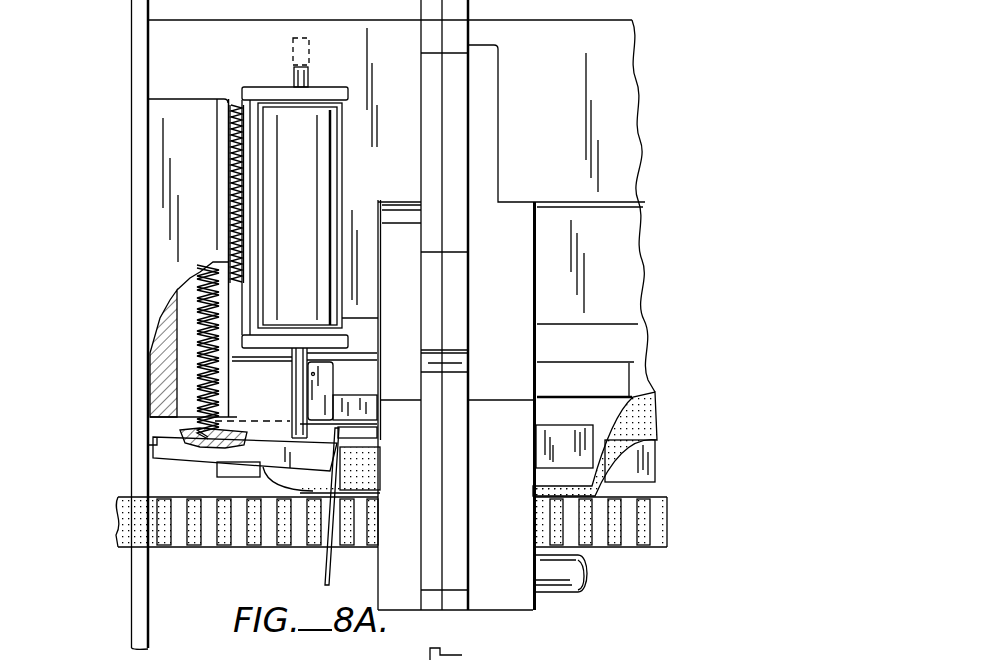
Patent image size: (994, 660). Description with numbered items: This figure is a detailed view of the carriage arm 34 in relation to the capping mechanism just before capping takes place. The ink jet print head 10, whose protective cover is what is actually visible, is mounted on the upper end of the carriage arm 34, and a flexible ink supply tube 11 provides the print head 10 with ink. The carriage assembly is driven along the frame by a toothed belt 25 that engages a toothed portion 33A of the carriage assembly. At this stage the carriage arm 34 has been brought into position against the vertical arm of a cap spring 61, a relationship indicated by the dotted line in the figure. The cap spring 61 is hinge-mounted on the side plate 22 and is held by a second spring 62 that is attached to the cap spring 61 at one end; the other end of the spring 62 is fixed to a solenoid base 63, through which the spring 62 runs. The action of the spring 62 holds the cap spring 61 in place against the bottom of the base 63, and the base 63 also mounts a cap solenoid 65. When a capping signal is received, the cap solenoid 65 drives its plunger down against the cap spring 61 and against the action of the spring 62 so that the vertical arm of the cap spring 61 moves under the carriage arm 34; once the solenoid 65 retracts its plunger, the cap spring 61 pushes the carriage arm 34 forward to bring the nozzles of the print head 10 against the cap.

The ink jet print head 10 is at (488, 135).
The flexible ink supply tube 11 is at (567, 592).
The side plate 22 is at (131, 108).
The belt 25 is at (647, 420).
The toothed portion 33A is at (643, 460).
The carriage arm 34 is at (340, 407).
The cap spring 61 is at (325, 558).
The second spring 62 is at (198, 357).
The solenoid base 63 is at (174, 106).
The cap solenoid 65 is at (323, 178).